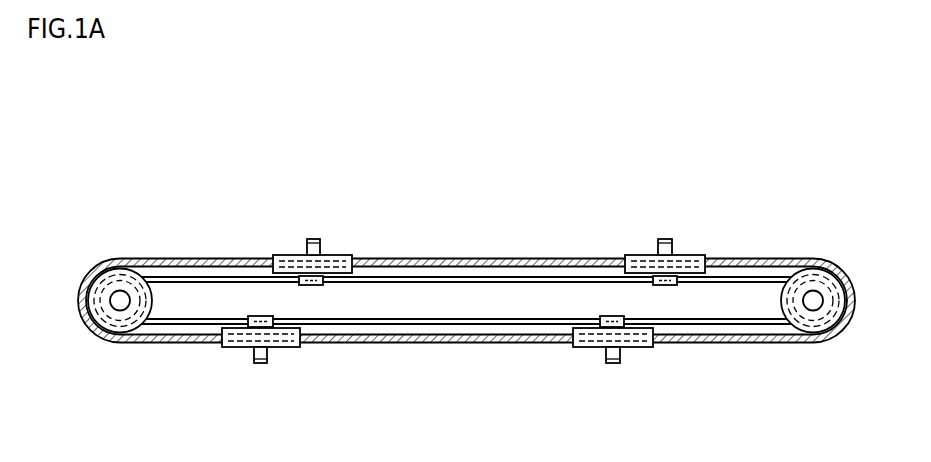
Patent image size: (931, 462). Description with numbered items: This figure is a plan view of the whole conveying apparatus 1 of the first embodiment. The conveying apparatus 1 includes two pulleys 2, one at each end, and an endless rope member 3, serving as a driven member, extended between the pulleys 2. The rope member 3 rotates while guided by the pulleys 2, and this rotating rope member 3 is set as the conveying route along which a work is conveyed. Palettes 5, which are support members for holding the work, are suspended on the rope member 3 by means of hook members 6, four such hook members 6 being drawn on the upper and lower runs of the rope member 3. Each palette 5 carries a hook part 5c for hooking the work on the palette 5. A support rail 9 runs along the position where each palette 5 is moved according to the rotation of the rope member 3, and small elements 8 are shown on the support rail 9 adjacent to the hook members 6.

The conveying apparatus 1 is at (466, 244).
The pulley 2 is at (166, 302).
The rope member 3 is at (455, 343).
The palette 5 is at (460, 301).
The hook part 5c is at (313, 239).
The hook member 6 is at (283, 255).
The sensor box 8 is at (259, 316).
The support rail 9 is at (437, 292).